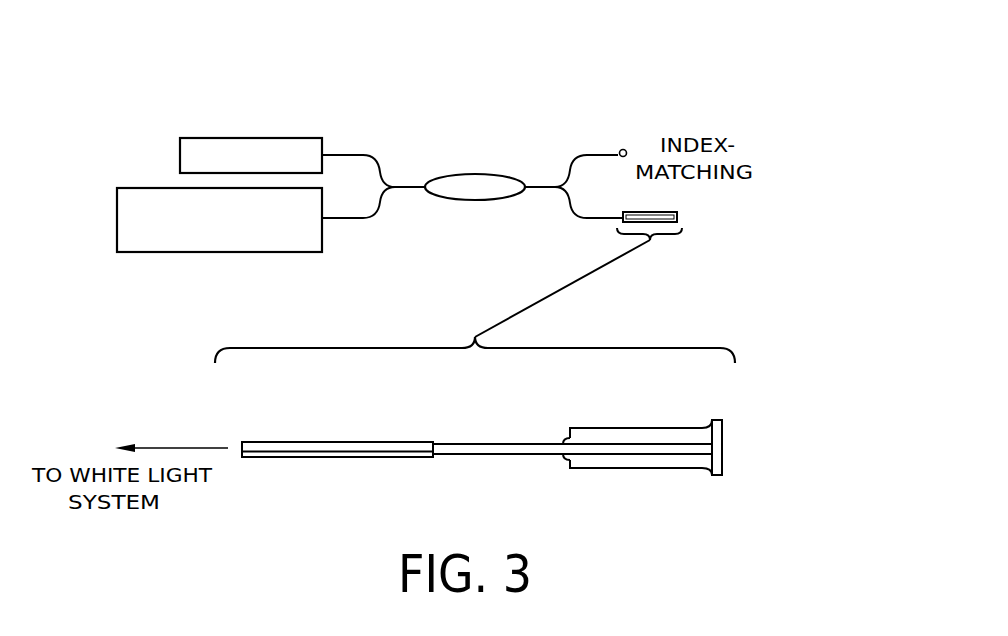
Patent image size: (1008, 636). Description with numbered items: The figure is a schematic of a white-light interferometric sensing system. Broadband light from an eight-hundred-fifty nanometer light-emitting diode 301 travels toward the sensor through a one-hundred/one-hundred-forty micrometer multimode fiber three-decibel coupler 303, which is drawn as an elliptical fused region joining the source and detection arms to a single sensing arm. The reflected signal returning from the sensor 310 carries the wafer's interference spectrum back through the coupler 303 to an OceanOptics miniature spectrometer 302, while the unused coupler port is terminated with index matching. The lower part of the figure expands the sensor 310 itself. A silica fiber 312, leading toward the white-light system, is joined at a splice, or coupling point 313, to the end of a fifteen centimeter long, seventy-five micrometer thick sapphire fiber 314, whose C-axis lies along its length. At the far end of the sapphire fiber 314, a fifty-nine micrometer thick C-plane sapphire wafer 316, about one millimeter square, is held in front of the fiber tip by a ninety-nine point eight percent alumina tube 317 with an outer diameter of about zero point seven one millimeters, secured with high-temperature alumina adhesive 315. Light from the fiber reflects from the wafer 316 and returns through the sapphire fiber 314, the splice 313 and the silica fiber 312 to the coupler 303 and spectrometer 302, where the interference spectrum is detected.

The light-emitting diode 301 is at (192, 138).
The spectrometer 302 is at (117, 208).
The 3 dB-coupler 303 is at (585, 143).
The sensor 310 is at (827, 229).
The silica fiber 312 is at (283, 441).
The splice 313 is at (433, 458).
The sapphire fiber 314 is at (548, 419).
The high-temperature adhesive 315 is at (605, 526).
The sapphire wafer 316 is at (723, 437).
The alumina tube 317 is at (697, 408).